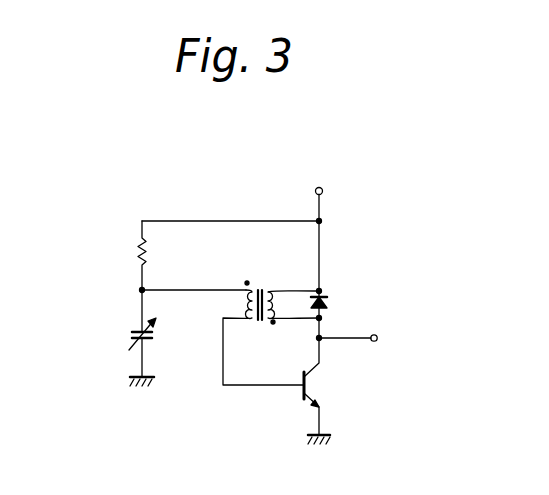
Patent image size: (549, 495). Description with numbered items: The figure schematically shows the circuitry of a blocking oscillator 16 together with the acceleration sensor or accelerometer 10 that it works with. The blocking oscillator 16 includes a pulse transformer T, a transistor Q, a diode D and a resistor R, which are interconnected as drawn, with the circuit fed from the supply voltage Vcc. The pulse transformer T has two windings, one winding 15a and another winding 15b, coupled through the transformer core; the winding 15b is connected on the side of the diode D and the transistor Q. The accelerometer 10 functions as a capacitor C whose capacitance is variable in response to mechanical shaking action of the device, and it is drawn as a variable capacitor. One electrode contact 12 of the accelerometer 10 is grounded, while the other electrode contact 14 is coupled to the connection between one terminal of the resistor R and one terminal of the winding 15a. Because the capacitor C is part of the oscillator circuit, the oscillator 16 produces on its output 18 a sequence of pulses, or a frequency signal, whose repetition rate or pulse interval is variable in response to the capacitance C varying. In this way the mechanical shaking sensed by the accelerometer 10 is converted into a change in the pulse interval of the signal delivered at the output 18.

The acceleration sensor 10 is at (128, 336).
The electrode contact 12 is at (146, 360).
The electrode contact 14 is at (140, 290).
The winding 15a is at (248, 303).
The winding 15b is at (272, 293).
The blocking oscillator 16 is at (215, 212).
The output 18 is at (378, 334).
The resistor R is at (150, 251).
The capacitor C is at (155, 339).
The pulse transformer T is at (260, 294).
The diode D is at (331, 301).
The transistor Q is at (322, 386).
The supply voltage terminal Vcc is at (326, 192).